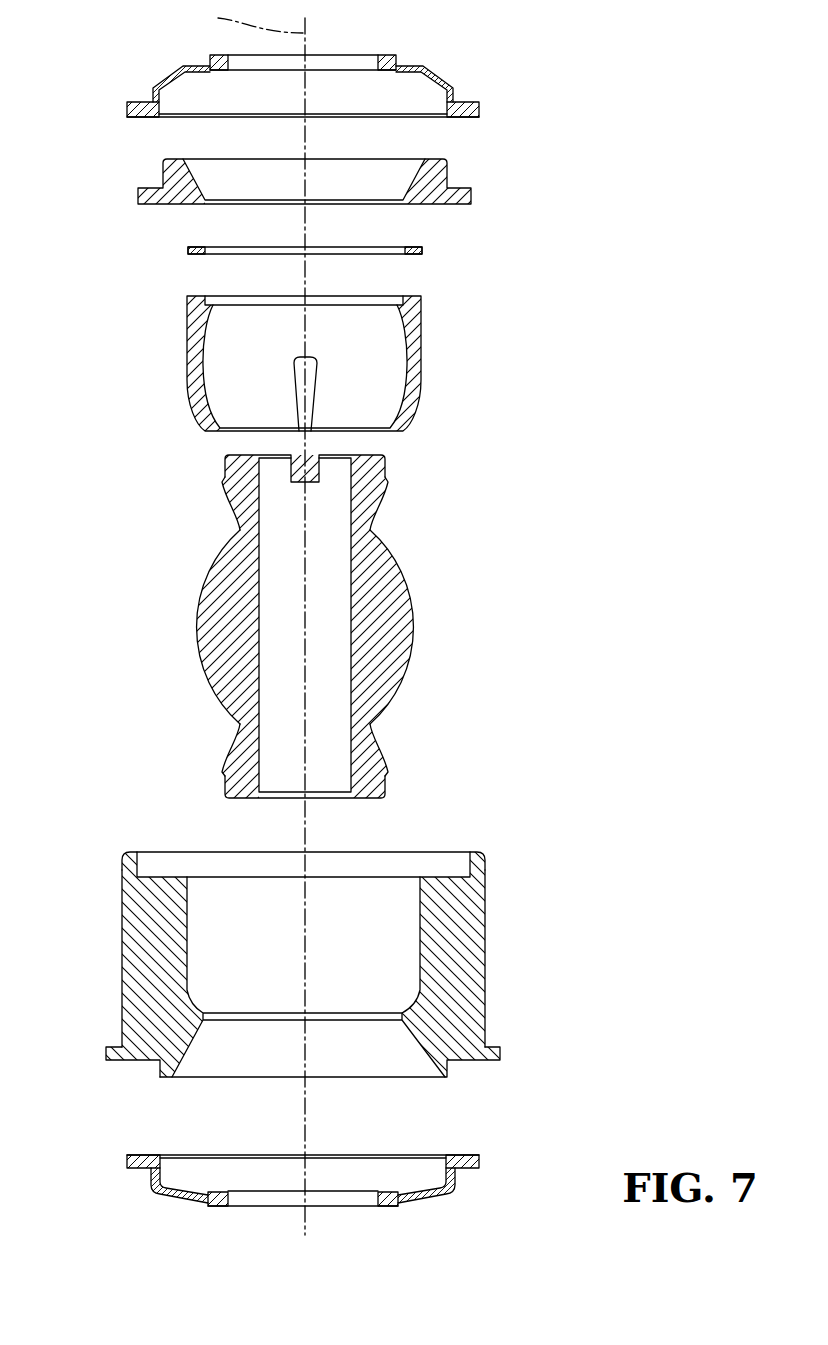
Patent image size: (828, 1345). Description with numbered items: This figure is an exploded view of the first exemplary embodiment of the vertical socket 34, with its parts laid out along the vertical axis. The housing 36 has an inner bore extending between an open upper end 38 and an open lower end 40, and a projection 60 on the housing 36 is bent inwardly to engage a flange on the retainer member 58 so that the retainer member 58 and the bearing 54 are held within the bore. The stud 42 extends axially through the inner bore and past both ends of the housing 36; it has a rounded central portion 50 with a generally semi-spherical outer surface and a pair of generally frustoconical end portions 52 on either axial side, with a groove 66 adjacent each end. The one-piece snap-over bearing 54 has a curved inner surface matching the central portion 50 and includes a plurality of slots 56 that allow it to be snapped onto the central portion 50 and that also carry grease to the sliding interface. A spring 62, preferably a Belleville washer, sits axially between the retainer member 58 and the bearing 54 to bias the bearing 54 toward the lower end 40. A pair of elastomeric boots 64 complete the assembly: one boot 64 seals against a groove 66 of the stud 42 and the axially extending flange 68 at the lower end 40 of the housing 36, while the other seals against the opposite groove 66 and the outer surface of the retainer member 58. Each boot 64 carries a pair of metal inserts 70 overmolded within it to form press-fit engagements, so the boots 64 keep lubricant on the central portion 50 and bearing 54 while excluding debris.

The vertical socket 34 is at (641, 213).
The housing 36 is at (488, 895).
The open upper end 38 is at (428, 877).
The open lower end 40 is at (447, 1077).
The stud 42 is at (409, 597).
The rounded central portion 50 is at (410, 620).
The frustoconical end portions 52 is at (384, 490).
The bearing 54 is at (426, 362).
The slots 56 is at (312, 425).
The retainer member 58 is at (454, 173).
The projection 60 is at (131, 870).
The spring 62 is at (188, 250).
The boots 64 is at (459, 82).
The groove 66 is at (225, 480).
The axially extending flange 68 is at (160, 1078).
The metal inserts 70 is at (214, 57).